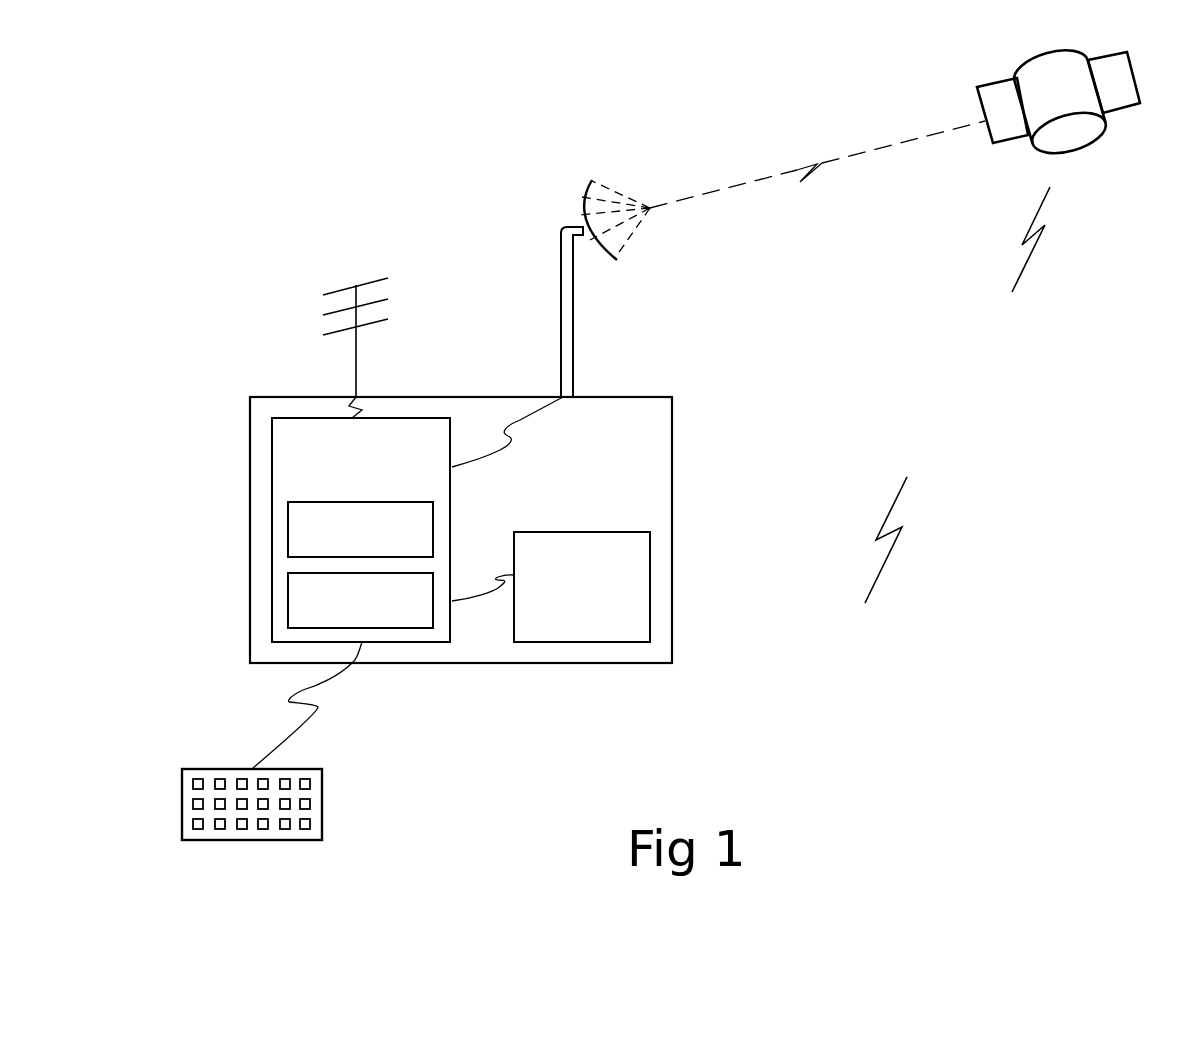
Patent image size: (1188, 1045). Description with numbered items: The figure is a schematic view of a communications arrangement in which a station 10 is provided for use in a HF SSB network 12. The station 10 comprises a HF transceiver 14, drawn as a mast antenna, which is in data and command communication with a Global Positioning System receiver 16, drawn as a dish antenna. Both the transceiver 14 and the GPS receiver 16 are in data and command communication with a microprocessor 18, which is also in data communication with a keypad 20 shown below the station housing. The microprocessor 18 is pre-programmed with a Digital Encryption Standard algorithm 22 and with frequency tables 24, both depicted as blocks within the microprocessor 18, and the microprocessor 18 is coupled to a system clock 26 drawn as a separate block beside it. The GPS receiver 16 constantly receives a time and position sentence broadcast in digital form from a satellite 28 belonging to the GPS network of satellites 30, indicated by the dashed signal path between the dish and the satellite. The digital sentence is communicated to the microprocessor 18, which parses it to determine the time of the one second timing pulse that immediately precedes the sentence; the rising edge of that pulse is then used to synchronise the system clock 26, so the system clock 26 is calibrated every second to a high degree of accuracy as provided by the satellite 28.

The station 10 is at (423, 663).
The HF SSB network 12 is at (878, 554).
The HF transceiver 14 is at (352, 353).
The GPS receiver 16 is at (573, 349).
The microprocessor 18 is at (396, 462).
The keypad 20 is at (324, 790).
The DES algorithm 22 is at (392, 530).
The frequency tables 24 is at (394, 602).
The system clock 26 is at (607, 601).
The satellite 28 is at (1058, 113).
The GPS network of satellites 30 is at (1022, 254).